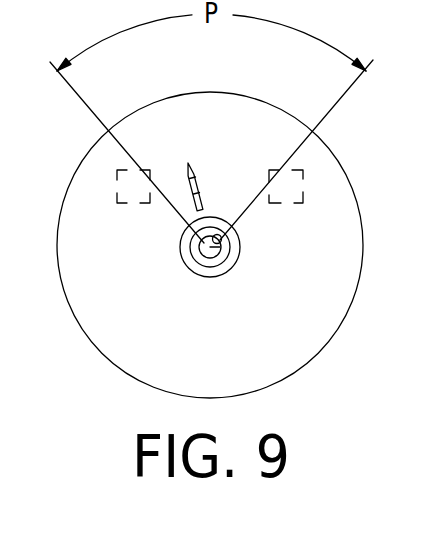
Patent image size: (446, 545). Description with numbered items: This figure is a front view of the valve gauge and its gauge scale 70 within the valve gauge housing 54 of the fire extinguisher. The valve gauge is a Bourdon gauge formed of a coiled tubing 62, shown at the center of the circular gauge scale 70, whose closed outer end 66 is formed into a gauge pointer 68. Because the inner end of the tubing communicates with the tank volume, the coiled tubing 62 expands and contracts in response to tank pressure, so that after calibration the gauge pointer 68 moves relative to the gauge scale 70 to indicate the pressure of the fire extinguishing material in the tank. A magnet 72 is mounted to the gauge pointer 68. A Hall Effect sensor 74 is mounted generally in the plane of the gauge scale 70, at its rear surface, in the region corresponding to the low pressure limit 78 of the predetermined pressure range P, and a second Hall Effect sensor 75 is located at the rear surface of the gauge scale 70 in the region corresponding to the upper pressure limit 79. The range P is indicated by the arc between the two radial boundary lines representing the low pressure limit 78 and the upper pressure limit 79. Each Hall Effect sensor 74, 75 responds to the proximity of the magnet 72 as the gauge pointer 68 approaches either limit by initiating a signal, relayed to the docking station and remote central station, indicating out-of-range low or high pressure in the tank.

The dial face outer periphery 54 is at (351, 181).
The coiled tubing 62 is at (234, 265).
The closed outer end 66 is at (204, 198).
The gauge pointer 68 is at (190, 162).
The gauge scale 70 is at (197, 337).
The magnet 72 is at (189, 183).
The Hall Effect sensor 74 is at (135, 206).
The second Hall Effect sensor 75 is at (285, 206).
The low pressure limit 78 is at (125, 150).
The upper pressure limit 79 is at (293, 150).